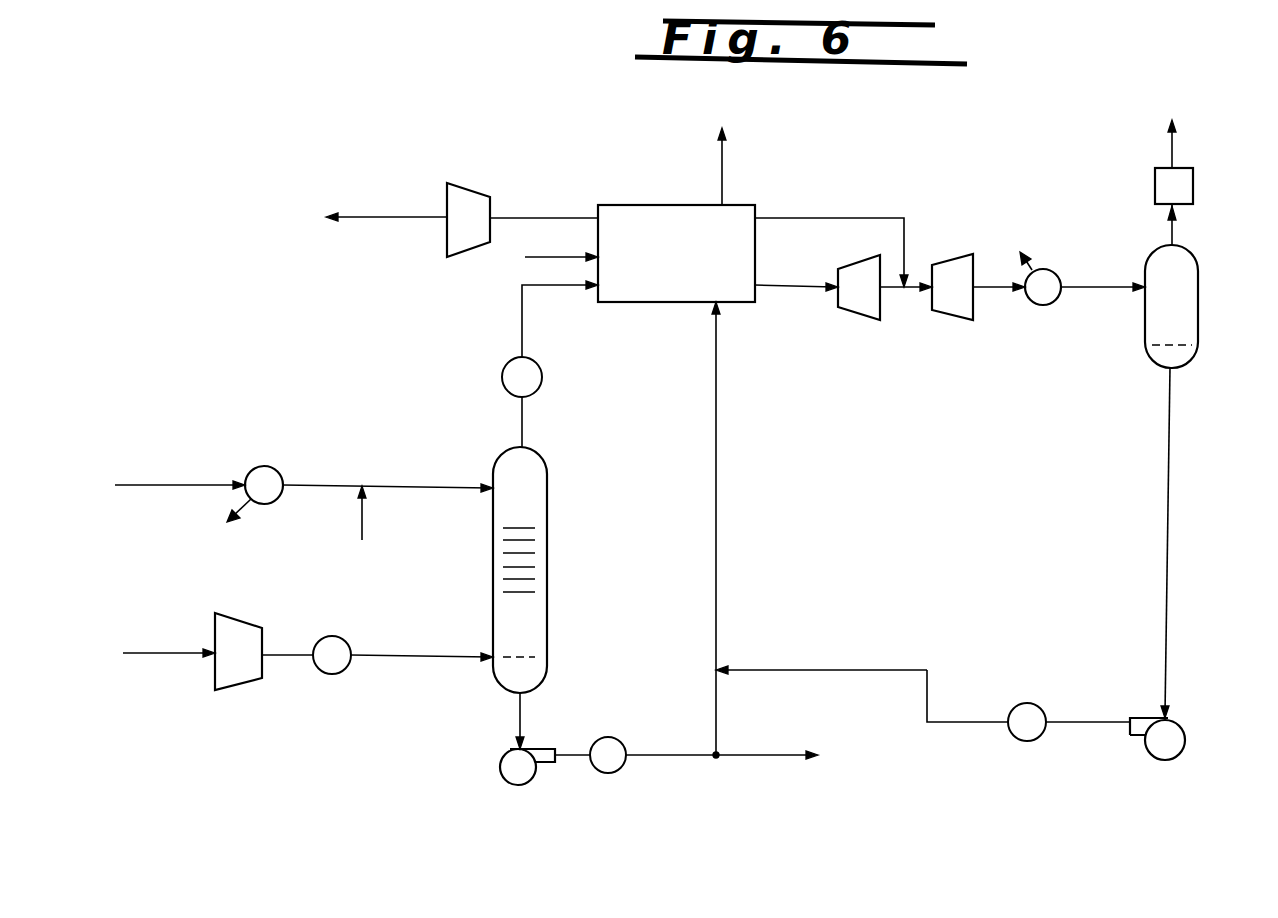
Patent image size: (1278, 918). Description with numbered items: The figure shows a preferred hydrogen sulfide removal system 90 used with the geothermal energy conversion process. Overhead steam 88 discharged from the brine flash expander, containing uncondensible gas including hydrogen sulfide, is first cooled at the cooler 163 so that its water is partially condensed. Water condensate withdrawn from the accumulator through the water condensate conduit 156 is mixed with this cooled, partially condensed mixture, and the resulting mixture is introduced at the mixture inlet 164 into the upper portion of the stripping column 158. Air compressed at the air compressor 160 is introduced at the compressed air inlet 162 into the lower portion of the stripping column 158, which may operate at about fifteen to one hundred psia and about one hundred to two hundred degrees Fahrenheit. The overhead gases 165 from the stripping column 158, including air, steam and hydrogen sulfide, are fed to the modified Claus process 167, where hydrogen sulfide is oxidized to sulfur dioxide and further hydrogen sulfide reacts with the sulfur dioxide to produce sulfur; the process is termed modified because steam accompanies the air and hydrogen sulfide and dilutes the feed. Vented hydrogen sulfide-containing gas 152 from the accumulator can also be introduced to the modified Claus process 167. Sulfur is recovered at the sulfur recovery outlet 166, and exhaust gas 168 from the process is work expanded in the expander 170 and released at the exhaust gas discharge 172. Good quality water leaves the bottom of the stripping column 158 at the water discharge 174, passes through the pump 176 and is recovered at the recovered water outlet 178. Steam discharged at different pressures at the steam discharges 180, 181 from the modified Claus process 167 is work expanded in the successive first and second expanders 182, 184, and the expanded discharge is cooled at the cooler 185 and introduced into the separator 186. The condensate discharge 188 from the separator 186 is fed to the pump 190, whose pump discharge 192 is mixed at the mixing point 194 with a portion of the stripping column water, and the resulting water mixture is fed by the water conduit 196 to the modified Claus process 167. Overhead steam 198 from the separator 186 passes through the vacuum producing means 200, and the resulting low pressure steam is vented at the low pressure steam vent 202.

The overhead steam 88 is at (128, 487).
The H2S removal system 90 is at (457, 418).
The vented H2S-containing gas 152 is at (560, 255).
The water condensate conduit 156 is at (362, 541).
The stripping column 158 is at (549, 571).
The air compressor 160 is at (233, 690).
The compressed air inlet 162 is at (403, 658).
The cooler 163 is at (266, 505).
The mixture inlet 164 is at (419, 490).
The overhead gases 165 is at (521, 321).
The sulfur recovery outlet 166 is at (724, 178).
The modified Claus process 167 is at (648, 205).
The exhaust gas 168 is at (531, 216).
The expander 170 is at (463, 184).
The exhaust gas discharge 172 is at (380, 215).
The water discharge 174 is at (522, 717).
The pump 176 is at (517, 786).
The recovered water outlet 178 is at (748, 759).
The steam discharge 180 is at (790, 290).
The steam discharge 181 is at (862, 214).
The first expander 182 is at (855, 322).
The second expander 184 is at (950, 322).
The cooler 185 is at (1043, 306).
The separator 186 is at (1199, 320).
The condensate discharge 188 is at (1170, 413).
The pump 190 is at (1165, 760).
The pump discharge 192 is at (840, 673).
The mixing point 194 is at (714, 669).
The water conduit 196 is at (718, 511).
The overhead steam 198 is at (1170, 234).
The vacuum producing means 200 is at (1155, 191).
The low pressure steam vent 202 is at (1171, 151).